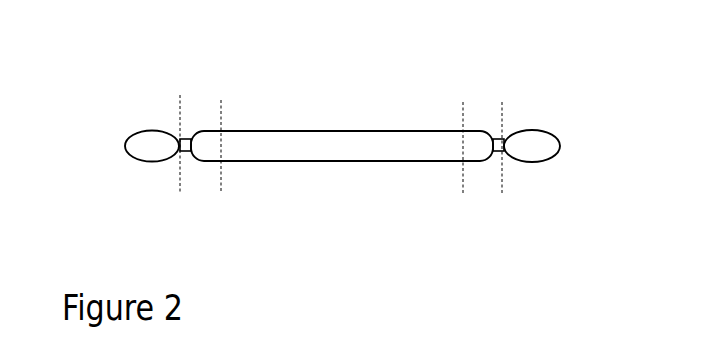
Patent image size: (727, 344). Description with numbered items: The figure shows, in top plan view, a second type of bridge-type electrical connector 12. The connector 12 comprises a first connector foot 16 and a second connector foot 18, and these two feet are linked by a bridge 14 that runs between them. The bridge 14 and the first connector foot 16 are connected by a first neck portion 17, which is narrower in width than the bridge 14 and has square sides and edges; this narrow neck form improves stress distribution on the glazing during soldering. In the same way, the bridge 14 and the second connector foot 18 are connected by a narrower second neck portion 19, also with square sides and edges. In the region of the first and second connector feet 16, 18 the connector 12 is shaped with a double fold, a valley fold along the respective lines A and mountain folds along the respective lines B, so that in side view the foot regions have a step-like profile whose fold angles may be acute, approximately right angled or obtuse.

The bridge-type electrical connector 12 is at (415, 49).
The bridge 14 is at (330, 129).
The first connector foot 16 is at (138, 132).
The first neck portion 17 is at (184, 153).
The second connector foot 18 is at (557, 138).
The second neck portion 19 is at (498, 153).